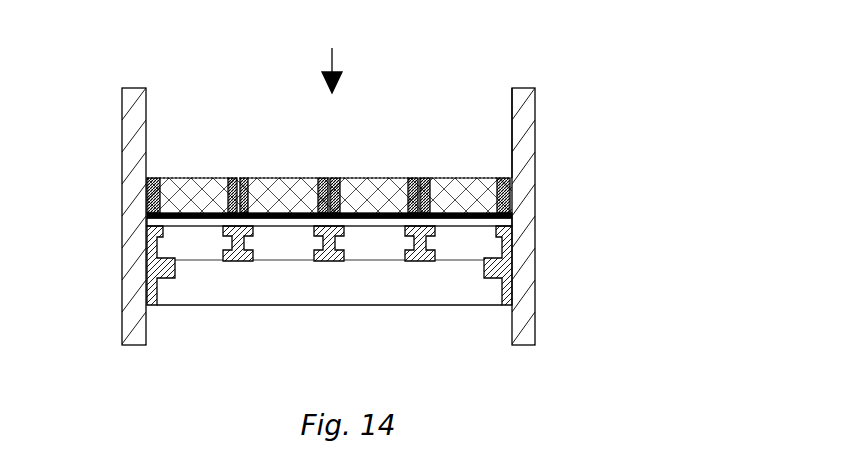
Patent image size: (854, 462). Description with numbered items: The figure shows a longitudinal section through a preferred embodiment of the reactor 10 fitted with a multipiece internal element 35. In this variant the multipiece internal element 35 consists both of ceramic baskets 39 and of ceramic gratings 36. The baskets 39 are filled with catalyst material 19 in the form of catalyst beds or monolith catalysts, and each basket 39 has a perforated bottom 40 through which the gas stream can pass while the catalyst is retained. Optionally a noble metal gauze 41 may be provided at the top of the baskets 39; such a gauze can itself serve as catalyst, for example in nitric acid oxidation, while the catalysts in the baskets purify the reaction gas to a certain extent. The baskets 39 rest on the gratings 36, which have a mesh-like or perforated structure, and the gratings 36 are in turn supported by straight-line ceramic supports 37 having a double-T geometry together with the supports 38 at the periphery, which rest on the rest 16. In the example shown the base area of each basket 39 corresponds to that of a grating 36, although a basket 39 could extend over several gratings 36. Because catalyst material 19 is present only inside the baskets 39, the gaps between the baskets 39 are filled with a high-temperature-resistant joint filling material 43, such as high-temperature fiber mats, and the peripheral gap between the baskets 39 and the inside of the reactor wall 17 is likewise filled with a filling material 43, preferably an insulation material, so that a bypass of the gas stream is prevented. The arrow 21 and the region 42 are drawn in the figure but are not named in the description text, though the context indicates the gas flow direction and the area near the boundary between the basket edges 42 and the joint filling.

The reactor 10 is at (663, 151).
The rest 16 is at (150, 292).
The reactor wall 17 is at (518, 120).
The catalyst material 19 is at (205, 195).
The applied force direction 21 is at (337, 57).
The multipiece internal element 35 is at (506, 164).
The gratings 36 is at (182, 227).
The straight-line supports 37 is at (240, 261).
The supports at the periphery 38 is at (150, 237).
The baskets 39 is at (188, 187).
The perforated bottom 40 is at (240, 180).
The noble metal gauze 41 is at (199, 227).
The spacer edge 42 is at (182, 178).
The joint filling material 43 is at (232, 180).